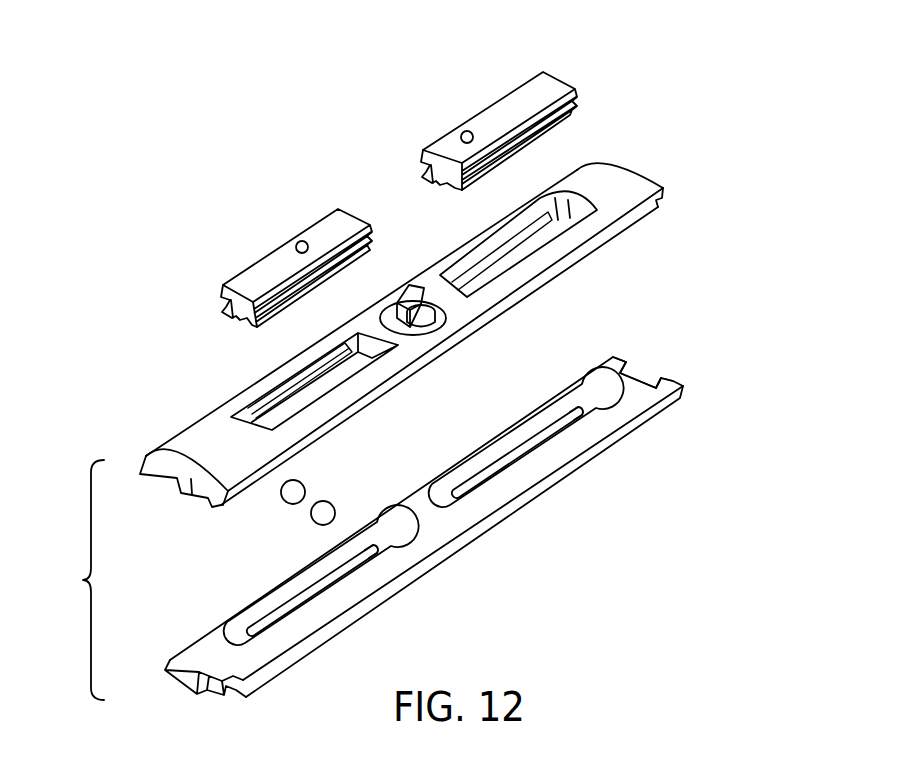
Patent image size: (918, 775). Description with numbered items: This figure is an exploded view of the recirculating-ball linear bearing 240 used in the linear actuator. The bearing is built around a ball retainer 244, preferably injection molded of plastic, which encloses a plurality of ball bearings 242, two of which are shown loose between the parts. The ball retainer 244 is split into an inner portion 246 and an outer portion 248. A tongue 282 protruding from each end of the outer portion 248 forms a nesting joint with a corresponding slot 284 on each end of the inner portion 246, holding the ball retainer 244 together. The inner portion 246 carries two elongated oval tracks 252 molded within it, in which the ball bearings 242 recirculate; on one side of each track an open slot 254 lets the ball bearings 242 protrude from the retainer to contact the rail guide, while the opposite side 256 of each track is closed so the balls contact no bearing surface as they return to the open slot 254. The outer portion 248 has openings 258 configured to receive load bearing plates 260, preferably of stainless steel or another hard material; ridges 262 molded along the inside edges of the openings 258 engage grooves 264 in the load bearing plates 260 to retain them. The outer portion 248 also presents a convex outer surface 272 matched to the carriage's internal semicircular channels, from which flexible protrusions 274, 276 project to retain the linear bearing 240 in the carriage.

The recirculating-ball linear bearing 240 is at (346, 138).
The ball bearings 242 is at (296, 480).
The ball retainer 244 is at (71, 580).
The inner portion 246 is at (667, 403).
The outer portion 248 is at (645, 186).
The elongated oval tracks 252 is at (510, 482).
The open slot 254 is at (583, 443).
The opposite side 256 is at (513, 443).
The openings 258 is at (322, 390).
The load bearing plates 260 is at (297, 241).
The ridges 262 is at (260, 398).
The grooves 264 is at (226, 309).
The convex outer surface 272 is at (628, 190).
The flexible protrusion 274 is at (396, 316).
The flexible protrusion 276 is at (430, 318).
The tongue 282 is at (657, 204).
The slot 284 is at (228, 690).